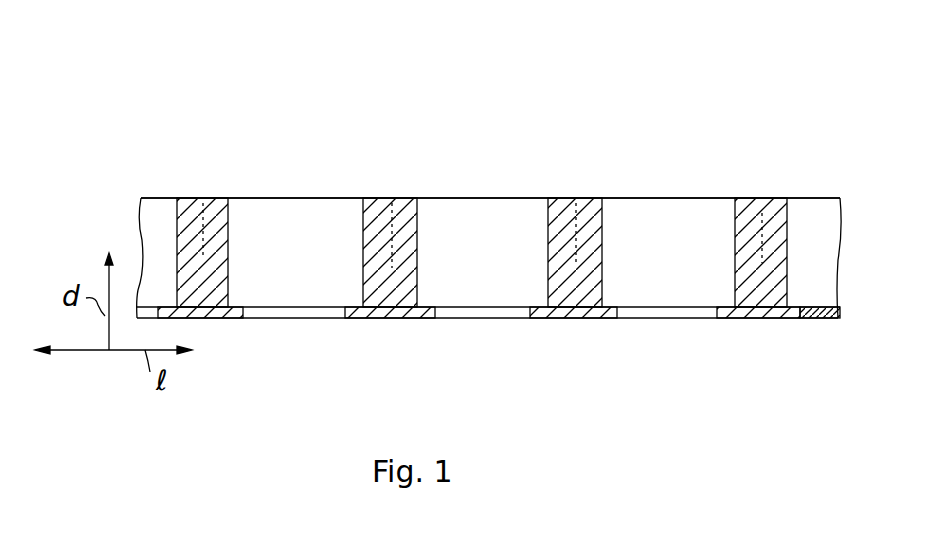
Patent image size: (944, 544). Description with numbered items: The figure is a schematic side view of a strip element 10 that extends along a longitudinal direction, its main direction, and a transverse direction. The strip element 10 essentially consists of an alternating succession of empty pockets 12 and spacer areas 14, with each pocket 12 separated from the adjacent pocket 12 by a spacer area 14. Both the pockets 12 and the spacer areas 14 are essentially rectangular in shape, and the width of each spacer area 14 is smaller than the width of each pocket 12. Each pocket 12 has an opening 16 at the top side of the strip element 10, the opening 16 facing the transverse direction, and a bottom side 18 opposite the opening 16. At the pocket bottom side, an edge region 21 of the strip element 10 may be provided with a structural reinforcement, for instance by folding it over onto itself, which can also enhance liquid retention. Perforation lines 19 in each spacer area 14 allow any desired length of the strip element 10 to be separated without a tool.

The strip element 10 is at (229, 143).
The pocket 12 is at (473, 256).
The spacer area 14 is at (203, 203).
The opening 16 is at (302, 198).
The bottom side 18 is at (297, 319).
The perforation line 19 is at (203, 260).
The edge region 21 is at (840, 312).